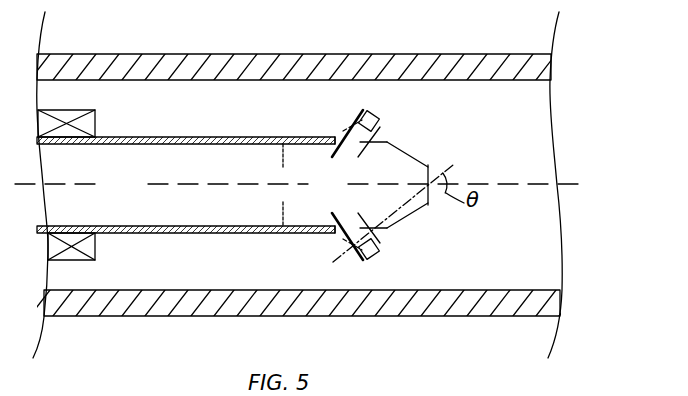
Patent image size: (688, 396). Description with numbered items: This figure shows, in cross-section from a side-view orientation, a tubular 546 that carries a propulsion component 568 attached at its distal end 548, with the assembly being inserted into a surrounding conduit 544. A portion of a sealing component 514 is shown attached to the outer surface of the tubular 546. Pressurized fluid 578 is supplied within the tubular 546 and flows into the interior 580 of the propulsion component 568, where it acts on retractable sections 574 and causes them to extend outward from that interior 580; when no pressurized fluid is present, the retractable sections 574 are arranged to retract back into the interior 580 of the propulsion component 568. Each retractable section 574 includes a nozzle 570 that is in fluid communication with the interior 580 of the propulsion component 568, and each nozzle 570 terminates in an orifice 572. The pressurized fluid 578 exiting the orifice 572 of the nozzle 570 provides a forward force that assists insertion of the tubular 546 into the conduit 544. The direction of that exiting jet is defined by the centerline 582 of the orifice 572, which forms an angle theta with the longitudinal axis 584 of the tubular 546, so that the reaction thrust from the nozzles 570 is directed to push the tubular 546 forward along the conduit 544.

The conduit 544 is at (117, 60).
The sealing component 514 is at (118, 108).
The tubular 546 is at (236, 137).
The distal end 548 is at (333, 137).
The orifice 572 is at (357, 123).
The retractable section 574 is at (377, 114).
The nozzle 570 is at (375, 134).
The interior 580 is at (395, 163).
The propulsion component 568 is at (432, 175).
The pressurized fluid 578 is at (145, 194).
The centerline 582 is at (330, 264).
The longitudinal axis 584 is at (569, 189).